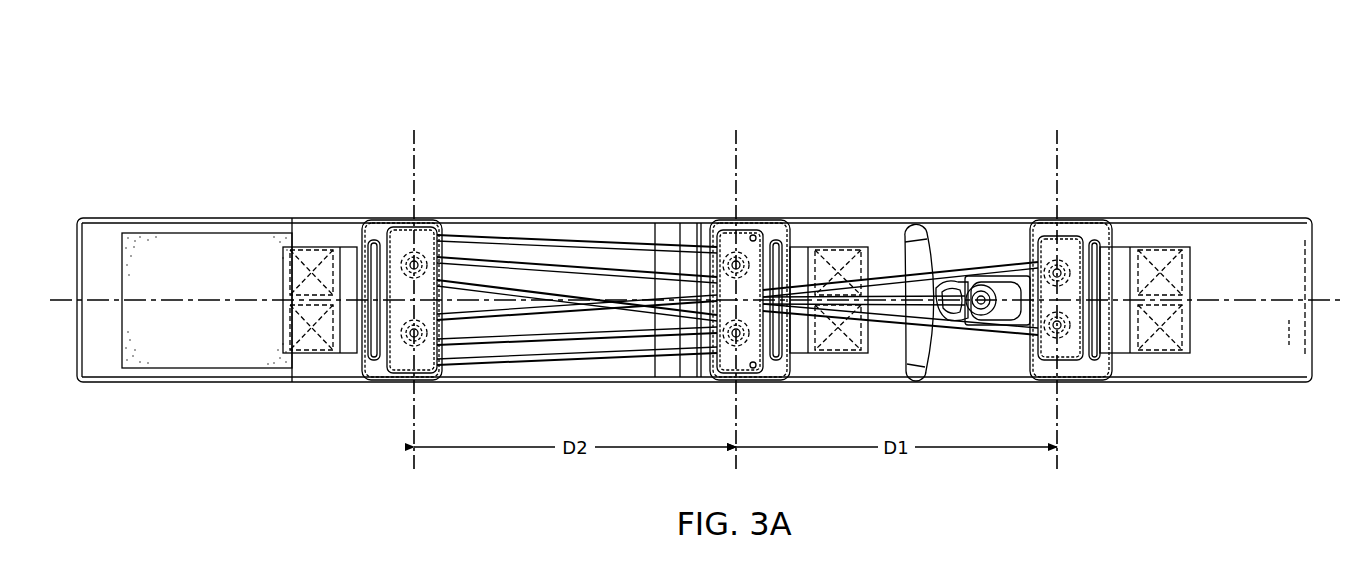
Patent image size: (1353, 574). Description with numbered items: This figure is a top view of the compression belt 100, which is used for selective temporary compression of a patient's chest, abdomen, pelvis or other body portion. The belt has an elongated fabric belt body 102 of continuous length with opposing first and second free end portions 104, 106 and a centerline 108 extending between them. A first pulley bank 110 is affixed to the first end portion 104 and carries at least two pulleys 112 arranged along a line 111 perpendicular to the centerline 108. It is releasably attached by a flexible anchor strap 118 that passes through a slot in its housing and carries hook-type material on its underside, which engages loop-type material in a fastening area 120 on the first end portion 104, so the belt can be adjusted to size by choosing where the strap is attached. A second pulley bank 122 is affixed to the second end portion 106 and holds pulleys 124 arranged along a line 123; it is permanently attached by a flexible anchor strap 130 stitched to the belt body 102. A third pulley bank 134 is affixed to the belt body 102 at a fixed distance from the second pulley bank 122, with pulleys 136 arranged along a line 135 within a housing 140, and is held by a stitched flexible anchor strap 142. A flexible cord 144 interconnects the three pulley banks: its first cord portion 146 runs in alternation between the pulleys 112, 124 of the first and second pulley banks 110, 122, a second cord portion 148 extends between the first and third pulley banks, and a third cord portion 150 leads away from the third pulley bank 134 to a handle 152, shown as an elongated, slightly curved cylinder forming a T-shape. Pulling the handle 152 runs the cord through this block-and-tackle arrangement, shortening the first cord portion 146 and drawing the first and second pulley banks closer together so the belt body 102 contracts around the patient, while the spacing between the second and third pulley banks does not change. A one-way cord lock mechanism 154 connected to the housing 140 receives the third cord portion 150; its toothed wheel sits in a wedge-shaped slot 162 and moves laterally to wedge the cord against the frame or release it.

The compression belt 100 is at (971, 66).
The belt body 102 is at (1278, 378).
The first end portion 104 is at (178, 217).
The second end portion 106 is at (639, 217).
The centerline 108 is at (1265, 298).
The first pulley bank 110 is at (430, 200).
The line 111 is at (412, 459).
The pulleys 112 is at (409, 258).
The flexible anchor strap 118 is at (330, 355).
The fastening area 120 is at (200, 358).
The second pulley bank 122 is at (748, 224).
The line 123 is at (734, 458).
The pulleys 124 is at (731, 258).
The flexible anchor strap 130 is at (838, 352).
The third pulley bank 134 is at (1084, 171).
The line 135 is at (1060, 458).
The pulleys 136 is at (1070, 240).
The housing 140 is at (1070, 352).
The flexible anchor strap 142 is at (1182, 323).
The flexible cord 144 is at (520, 365).
The first cord portion 146 is at (558, 228).
The second cord portion 148 is at (882, 256).
The third cord portion 150 is at (956, 322).
The handle 152 is at (912, 231).
The cord lock mechanism 154 is at (979, 260).
The wedge-shaped slot 162 is at (1002, 283).